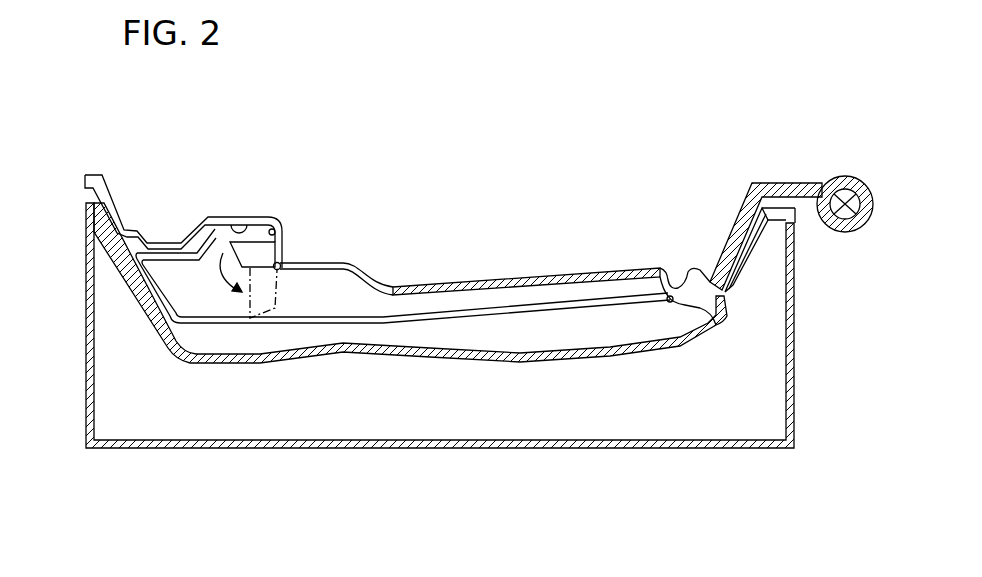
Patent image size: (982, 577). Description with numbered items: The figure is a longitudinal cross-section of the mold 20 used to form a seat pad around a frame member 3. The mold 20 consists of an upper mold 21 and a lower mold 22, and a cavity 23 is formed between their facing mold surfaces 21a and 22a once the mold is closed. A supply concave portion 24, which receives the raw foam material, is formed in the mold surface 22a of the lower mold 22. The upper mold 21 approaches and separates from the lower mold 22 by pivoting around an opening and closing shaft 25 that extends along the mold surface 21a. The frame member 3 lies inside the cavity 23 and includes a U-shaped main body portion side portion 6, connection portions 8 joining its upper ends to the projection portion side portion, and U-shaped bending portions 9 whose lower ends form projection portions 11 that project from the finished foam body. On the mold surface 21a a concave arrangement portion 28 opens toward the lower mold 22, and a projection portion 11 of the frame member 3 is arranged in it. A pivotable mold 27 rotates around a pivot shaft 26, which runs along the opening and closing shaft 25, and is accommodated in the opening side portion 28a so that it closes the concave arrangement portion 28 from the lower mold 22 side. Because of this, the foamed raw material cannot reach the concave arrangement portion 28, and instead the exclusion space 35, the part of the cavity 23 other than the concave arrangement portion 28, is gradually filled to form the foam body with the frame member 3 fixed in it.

The mold 20 is at (711, 90).
The upper mold 21 is at (84, 176).
The mold surface of the upper mold 21a is at (585, 283).
The lower mold 22 is at (85, 378).
The mold surface of the lower mold 22a is at (644, 333).
The cavity 23 is at (573, 344).
The supply concave portion 24 is at (532, 340).
The opening and closing shaft 25 is at (845, 216).
The pivot shaft 26 is at (281, 258).
The pivotable mold 27 is at (280, 263).
The concave arrangement portion 28 is at (250, 222).
The opening side portion 28a is at (227, 250).
The frame member 3 is at (527, 304).
The main body portion side portion 6 is at (384, 320).
The connection portion 8 is at (153, 288).
The bending portion 9 is at (162, 252).
The projection portion 11 is at (275, 230).
The exclusion space 35 is at (320, 330).